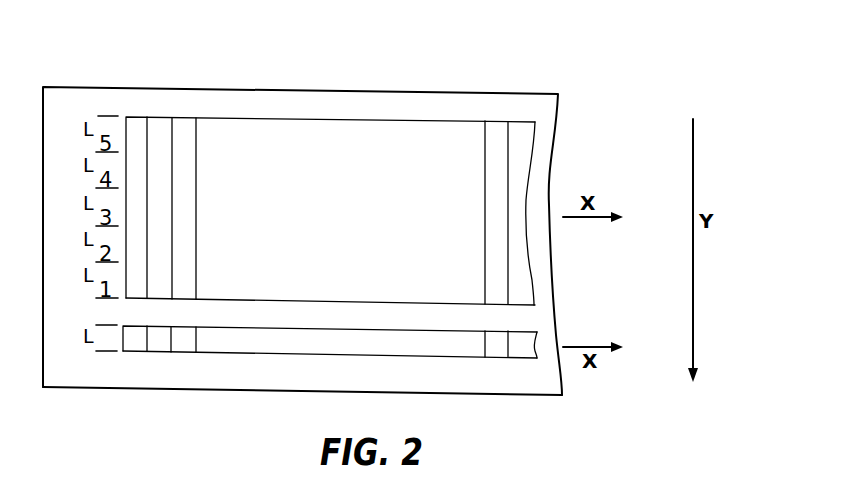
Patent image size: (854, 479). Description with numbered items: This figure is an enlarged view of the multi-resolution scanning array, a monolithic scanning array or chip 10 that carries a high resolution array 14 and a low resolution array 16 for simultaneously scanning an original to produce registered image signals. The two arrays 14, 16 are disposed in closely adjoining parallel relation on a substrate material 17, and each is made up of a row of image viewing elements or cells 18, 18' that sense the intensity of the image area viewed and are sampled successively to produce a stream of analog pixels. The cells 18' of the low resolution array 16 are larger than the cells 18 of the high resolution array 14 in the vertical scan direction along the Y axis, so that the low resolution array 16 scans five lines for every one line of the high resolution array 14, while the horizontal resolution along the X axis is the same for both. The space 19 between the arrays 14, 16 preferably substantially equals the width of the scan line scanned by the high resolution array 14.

The monolithic scanning array or chip 10 is at (302, 228).
The high resolution array 14 is at (330, 357).
The low resolution array 16 is at (363, 194).
The substrate material 17 is at (410, 393).
The image viewing elements or cells 18 is at (164, 357).
The image viewing elements or cells 18' is at (171, 195).
The space between arrays 19 is at (533, 321).